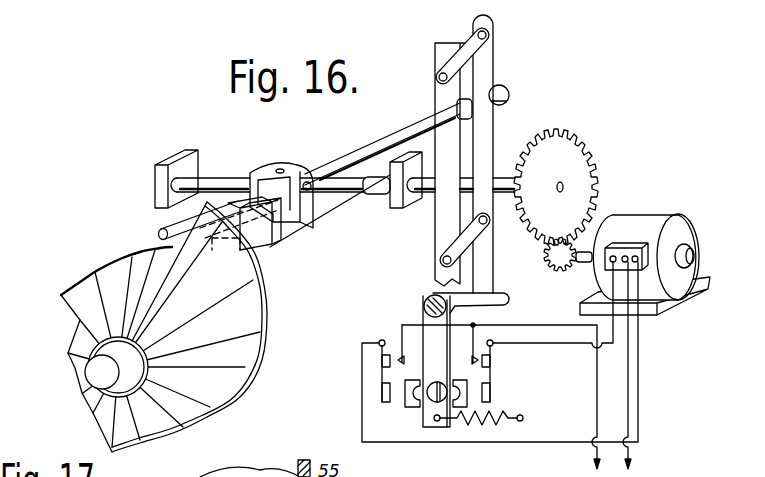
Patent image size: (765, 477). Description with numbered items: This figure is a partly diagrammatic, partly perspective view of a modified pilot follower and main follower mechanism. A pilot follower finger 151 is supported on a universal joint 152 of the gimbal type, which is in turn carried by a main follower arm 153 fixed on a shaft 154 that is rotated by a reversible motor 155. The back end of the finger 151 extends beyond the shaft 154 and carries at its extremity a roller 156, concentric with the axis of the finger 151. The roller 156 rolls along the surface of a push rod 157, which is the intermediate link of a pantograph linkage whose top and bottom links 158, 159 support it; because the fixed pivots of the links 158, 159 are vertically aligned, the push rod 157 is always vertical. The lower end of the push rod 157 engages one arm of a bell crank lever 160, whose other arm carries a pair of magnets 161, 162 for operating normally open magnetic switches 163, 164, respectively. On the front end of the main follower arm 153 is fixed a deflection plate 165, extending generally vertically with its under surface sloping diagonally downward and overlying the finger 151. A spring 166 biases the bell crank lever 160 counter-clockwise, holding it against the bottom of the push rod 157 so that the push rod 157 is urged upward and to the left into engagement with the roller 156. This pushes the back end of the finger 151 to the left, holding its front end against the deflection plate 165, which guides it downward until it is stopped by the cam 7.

The cam 7 is at (236, 381).
The pilot follower finger 151 is at (160, 232).
The universal joint 152 is at (298, 165).
The main follower arm 153 is at (352, 207).
The shaft 154 is at (222, 178).
The reversible motor 155 is at (662, 219).
The roller 156 is at (504, 89).
The push rod 157 is at (487, 129).
The top link 158 is at (470, 35).
The bottom link 159 is at (443, 251).
The bell crank lever 160 is at (505, 297).
The magnet 161 is at (412, 408).
The magnet 162 is at (448, 410).
The magnetic switch 163 is at (383, 402).
The magnetic switch 164 is at (488, 389).
The deflection plate 165 is at (267, 235).
The spring 166 is at (500, 416).